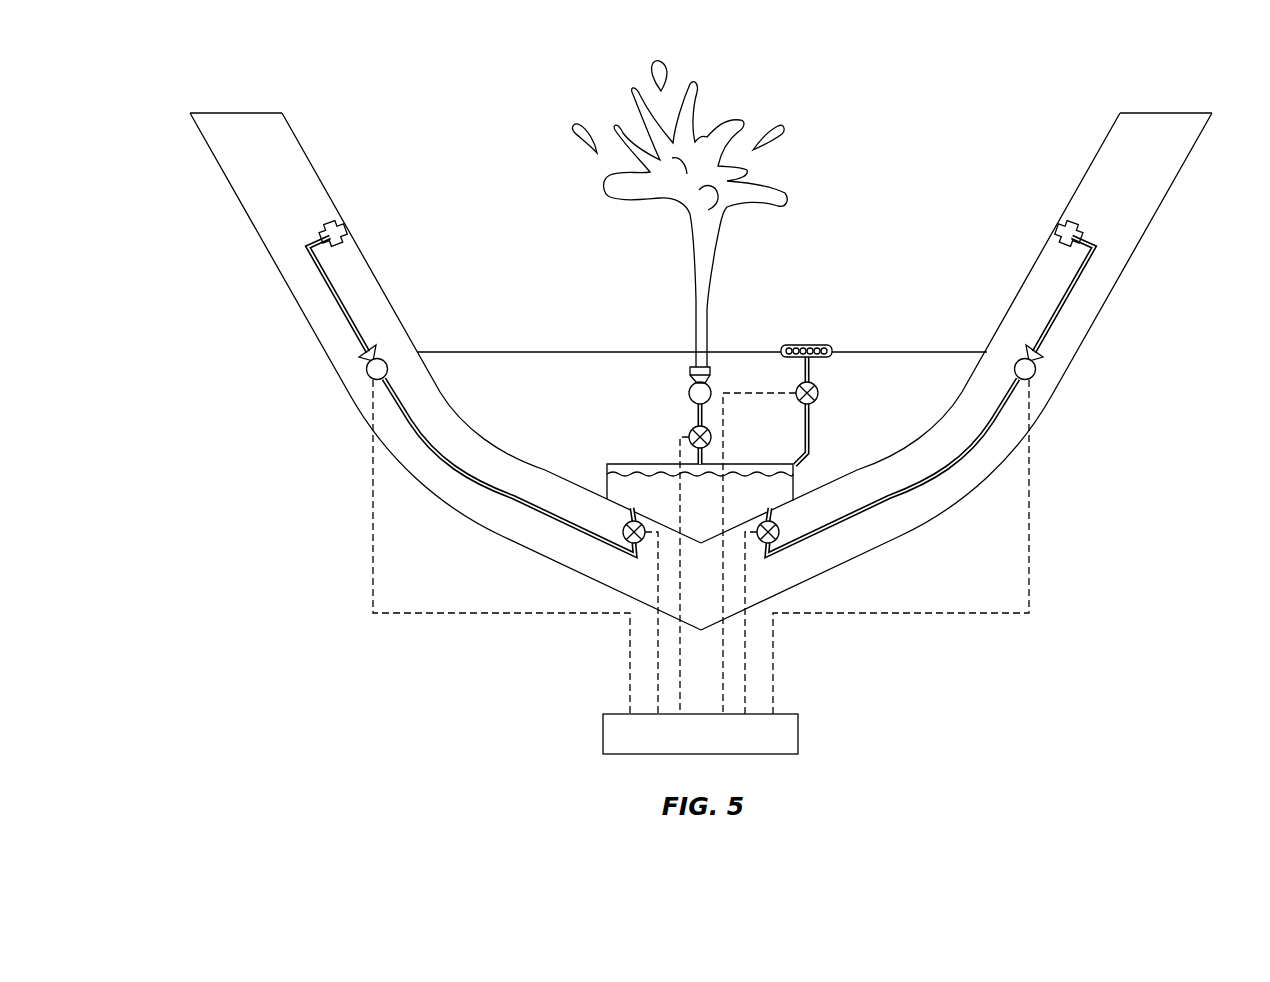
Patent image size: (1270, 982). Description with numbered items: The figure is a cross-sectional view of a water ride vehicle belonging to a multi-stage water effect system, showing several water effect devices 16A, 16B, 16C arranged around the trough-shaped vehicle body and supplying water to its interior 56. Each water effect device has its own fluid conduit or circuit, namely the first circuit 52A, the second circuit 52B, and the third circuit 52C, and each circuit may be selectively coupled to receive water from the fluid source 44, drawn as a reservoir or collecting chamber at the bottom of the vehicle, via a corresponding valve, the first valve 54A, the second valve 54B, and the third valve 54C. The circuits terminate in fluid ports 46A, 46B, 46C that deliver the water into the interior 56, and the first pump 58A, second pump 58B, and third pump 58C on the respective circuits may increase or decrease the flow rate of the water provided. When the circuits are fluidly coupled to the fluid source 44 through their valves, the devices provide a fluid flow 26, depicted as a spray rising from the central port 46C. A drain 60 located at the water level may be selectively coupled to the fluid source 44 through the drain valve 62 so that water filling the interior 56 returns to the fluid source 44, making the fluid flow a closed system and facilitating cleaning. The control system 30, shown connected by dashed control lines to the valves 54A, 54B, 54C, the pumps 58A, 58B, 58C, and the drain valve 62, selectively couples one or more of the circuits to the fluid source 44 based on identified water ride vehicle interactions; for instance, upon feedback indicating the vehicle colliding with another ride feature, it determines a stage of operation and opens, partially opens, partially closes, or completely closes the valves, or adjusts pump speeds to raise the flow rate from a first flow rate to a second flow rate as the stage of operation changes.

The first water effect device 16A is at (300, 267).
The second water effect device 16B is at (1102, 266).
The third water effect device 16C is at (632, 372).
The fluid flow 26 is at (740, 92).
The control system 30 is at (798, 728).
The fluid source 44 is at (632, 464).
The first fluid port 46A is at (327, 224).
The second fluid port 46B is at (1077, 224).
The third fluid port 46C is at (712, 371).
The first circuit 52A is at (338, 292).
The second circuit 52B is at (1064, 292).
The third circuit 52C is at (703, 455).
The first valve 54A is at (623, 530).
The second valve 54B is at (780, 530).
The third valve 54C is at (688, 433).
The interior 56 is at (443, 127).
The first pump 58A is at (385, 358).
The second pump 58B is at (1017, 358).
The third pump 58C is at (690, 390).
The drain 60 is at (808, 343).
The drain valve 62 is at (820, 397).